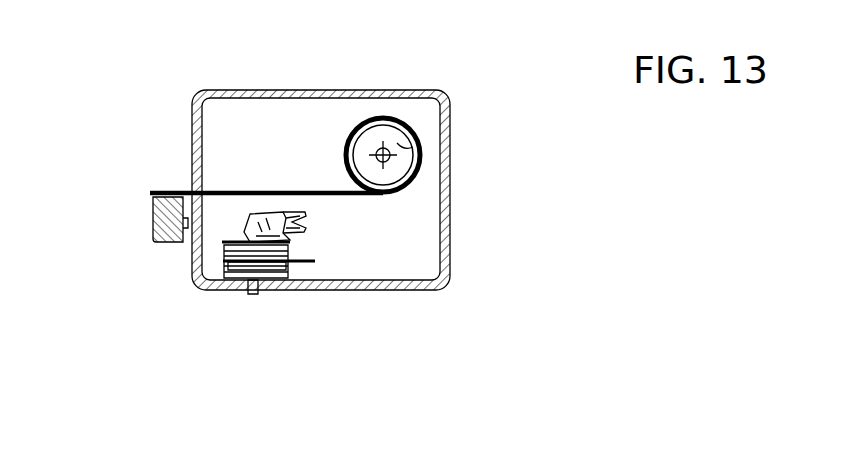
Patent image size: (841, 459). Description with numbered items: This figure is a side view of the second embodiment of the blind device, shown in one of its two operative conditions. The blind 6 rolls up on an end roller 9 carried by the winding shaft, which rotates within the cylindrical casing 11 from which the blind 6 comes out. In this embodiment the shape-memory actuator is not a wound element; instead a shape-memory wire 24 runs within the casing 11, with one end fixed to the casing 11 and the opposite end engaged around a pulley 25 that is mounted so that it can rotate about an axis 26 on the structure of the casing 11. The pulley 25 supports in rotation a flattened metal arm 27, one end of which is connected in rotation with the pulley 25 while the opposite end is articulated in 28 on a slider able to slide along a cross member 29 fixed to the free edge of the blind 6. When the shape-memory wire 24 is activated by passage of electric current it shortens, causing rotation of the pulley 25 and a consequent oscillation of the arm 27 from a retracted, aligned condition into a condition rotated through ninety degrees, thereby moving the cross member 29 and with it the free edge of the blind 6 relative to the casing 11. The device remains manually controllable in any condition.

The blind 6 is at (327, 192).
The end roller 9 is at (400, 150).
The cylindrical casing 11 is at (452, 228).
The shape-memory wire 24 is at (312, 262).
The pulley 25 is at (272, 279).
The axis 26 is at (253, 303).
The flattened metal arm 27 is at (254, 222).
The articulation 28 is at (302, 220).
The cross member 29 is at (160, 243).